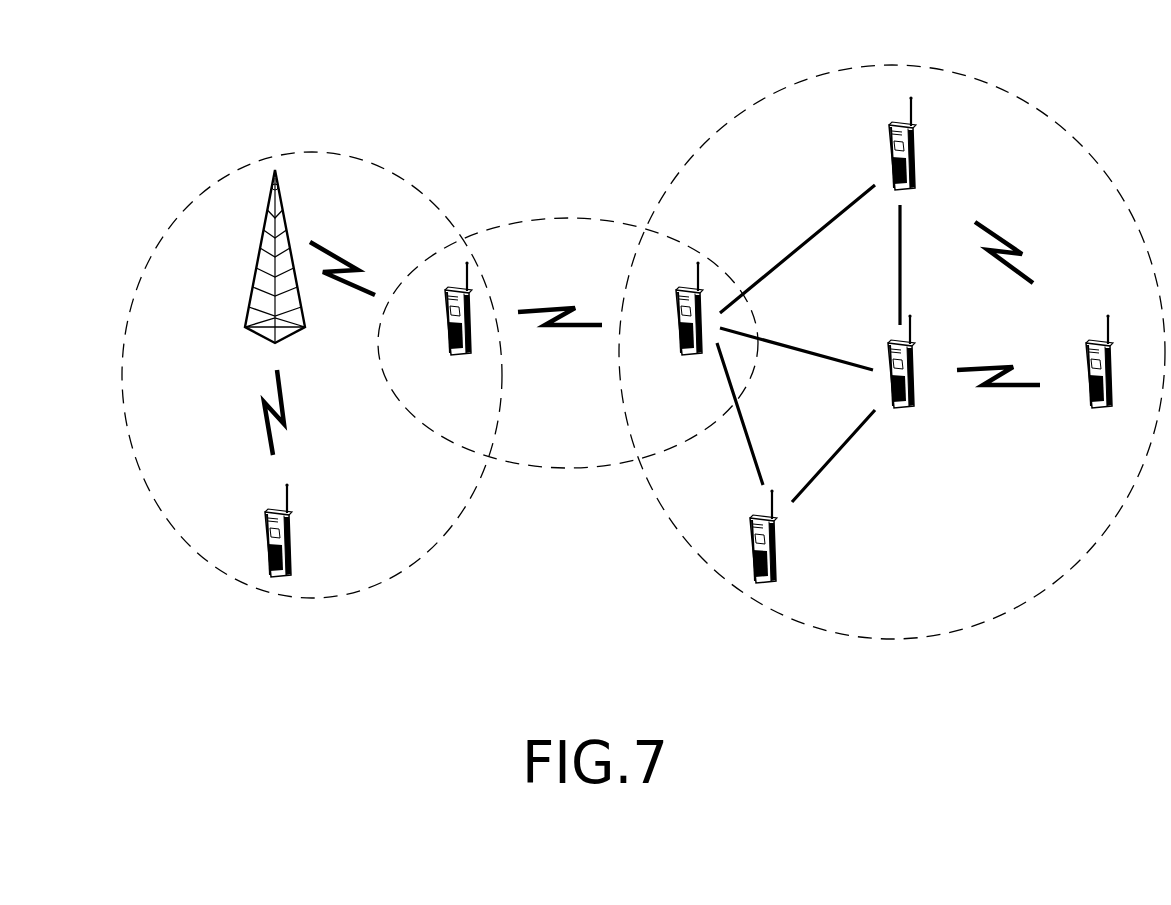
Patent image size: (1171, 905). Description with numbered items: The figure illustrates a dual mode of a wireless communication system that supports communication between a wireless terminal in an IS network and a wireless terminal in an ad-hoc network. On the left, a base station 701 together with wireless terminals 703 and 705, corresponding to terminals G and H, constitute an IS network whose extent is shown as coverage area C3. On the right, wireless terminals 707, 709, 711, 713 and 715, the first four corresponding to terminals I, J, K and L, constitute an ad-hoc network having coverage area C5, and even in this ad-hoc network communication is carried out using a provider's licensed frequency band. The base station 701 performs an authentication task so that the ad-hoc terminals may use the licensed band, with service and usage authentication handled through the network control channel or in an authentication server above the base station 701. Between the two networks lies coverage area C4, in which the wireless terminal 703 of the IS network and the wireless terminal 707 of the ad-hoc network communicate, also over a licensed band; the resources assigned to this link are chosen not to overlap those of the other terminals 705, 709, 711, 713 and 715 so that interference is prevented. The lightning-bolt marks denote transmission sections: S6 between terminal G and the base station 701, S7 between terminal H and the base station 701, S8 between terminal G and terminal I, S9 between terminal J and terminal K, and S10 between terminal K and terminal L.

The coverage area C3 is at (312, 151).
The coverage area C4 is at (570, 217).
The coverage area C5 is at (892, 64).
The base station 701 is at (260, 265).
The wireless terminal 703 is at (456, 358).
The wireless terminal 705 is at (292, 545).
The wireless terminal 707 is at (688, 358).
The wireless terminal 709 is at (898, 412).
The wireless terminal 711 is at (1096, 412).
The wireless terminal 713 is at (916, 155).
The wireless terminal 715 is at (777, 550).
The transmission section S6 is at (347, 286).
The transmission section S7 is at (263, 430).
The transmission section S8 is at (574, 332).
The transmission section S9 is at (1012, 390).
The transmission section S10 is at (1008, 272).